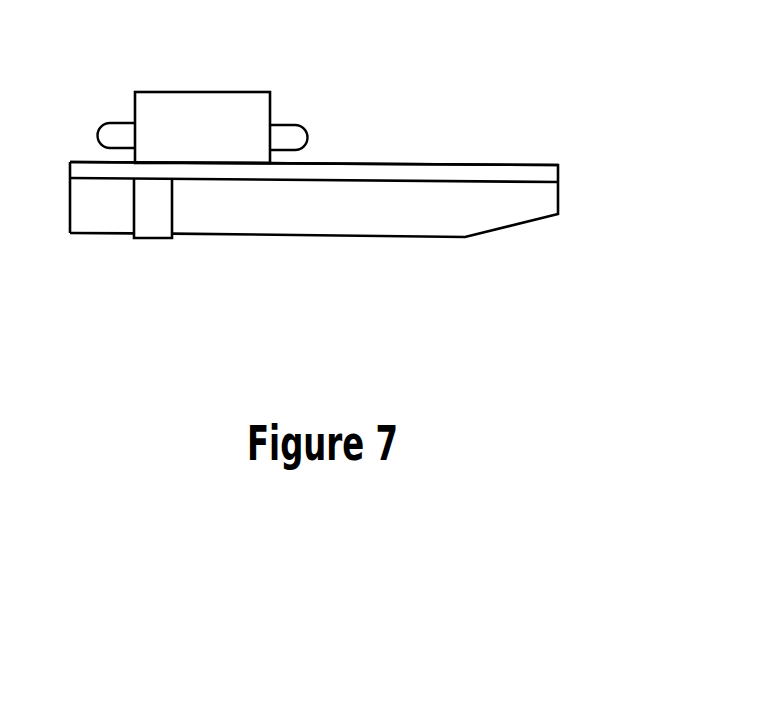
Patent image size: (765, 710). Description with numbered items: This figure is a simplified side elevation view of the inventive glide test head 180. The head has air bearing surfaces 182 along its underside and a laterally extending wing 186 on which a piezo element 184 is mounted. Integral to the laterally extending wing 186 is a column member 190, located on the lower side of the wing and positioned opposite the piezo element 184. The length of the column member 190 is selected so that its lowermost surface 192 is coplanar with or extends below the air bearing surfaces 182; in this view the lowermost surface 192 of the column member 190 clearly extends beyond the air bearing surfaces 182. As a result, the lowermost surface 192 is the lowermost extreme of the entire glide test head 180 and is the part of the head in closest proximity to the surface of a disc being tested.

The glide test head 180 is at (518, 97).
The air bearing surfaces 182 is at (383, 237).
The piezo element 184 is at (178, 108).
The laterally extending wing 186 is at (352, 173).
The column member 190 is at (150, 207).
The lowermost surface 192 is at (152, 238).